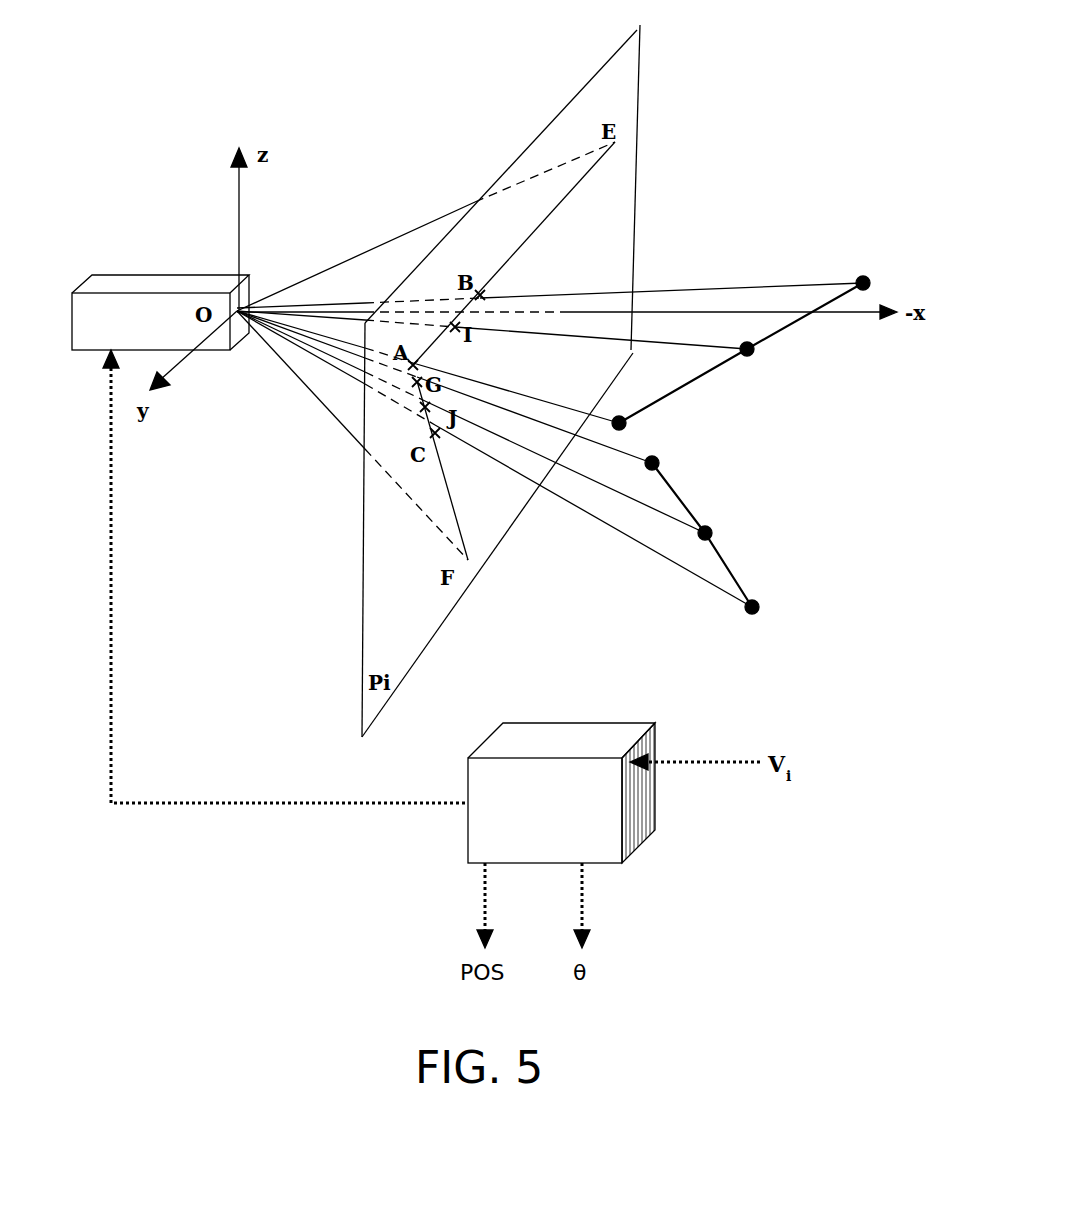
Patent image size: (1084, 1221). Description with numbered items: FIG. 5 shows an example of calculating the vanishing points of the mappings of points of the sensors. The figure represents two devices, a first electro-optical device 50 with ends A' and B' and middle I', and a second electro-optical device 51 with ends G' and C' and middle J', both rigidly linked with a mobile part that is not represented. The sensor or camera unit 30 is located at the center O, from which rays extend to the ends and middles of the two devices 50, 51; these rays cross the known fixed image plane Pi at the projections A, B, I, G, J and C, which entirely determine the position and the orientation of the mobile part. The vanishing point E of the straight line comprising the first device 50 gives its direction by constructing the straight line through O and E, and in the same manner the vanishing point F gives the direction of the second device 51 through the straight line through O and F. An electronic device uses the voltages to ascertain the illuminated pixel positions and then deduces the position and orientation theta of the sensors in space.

The camera / imaging device 30 is at (147, 285).
The first object line segment 50 is at (795, 330).
The second object line segment 51 is at (748, 573).